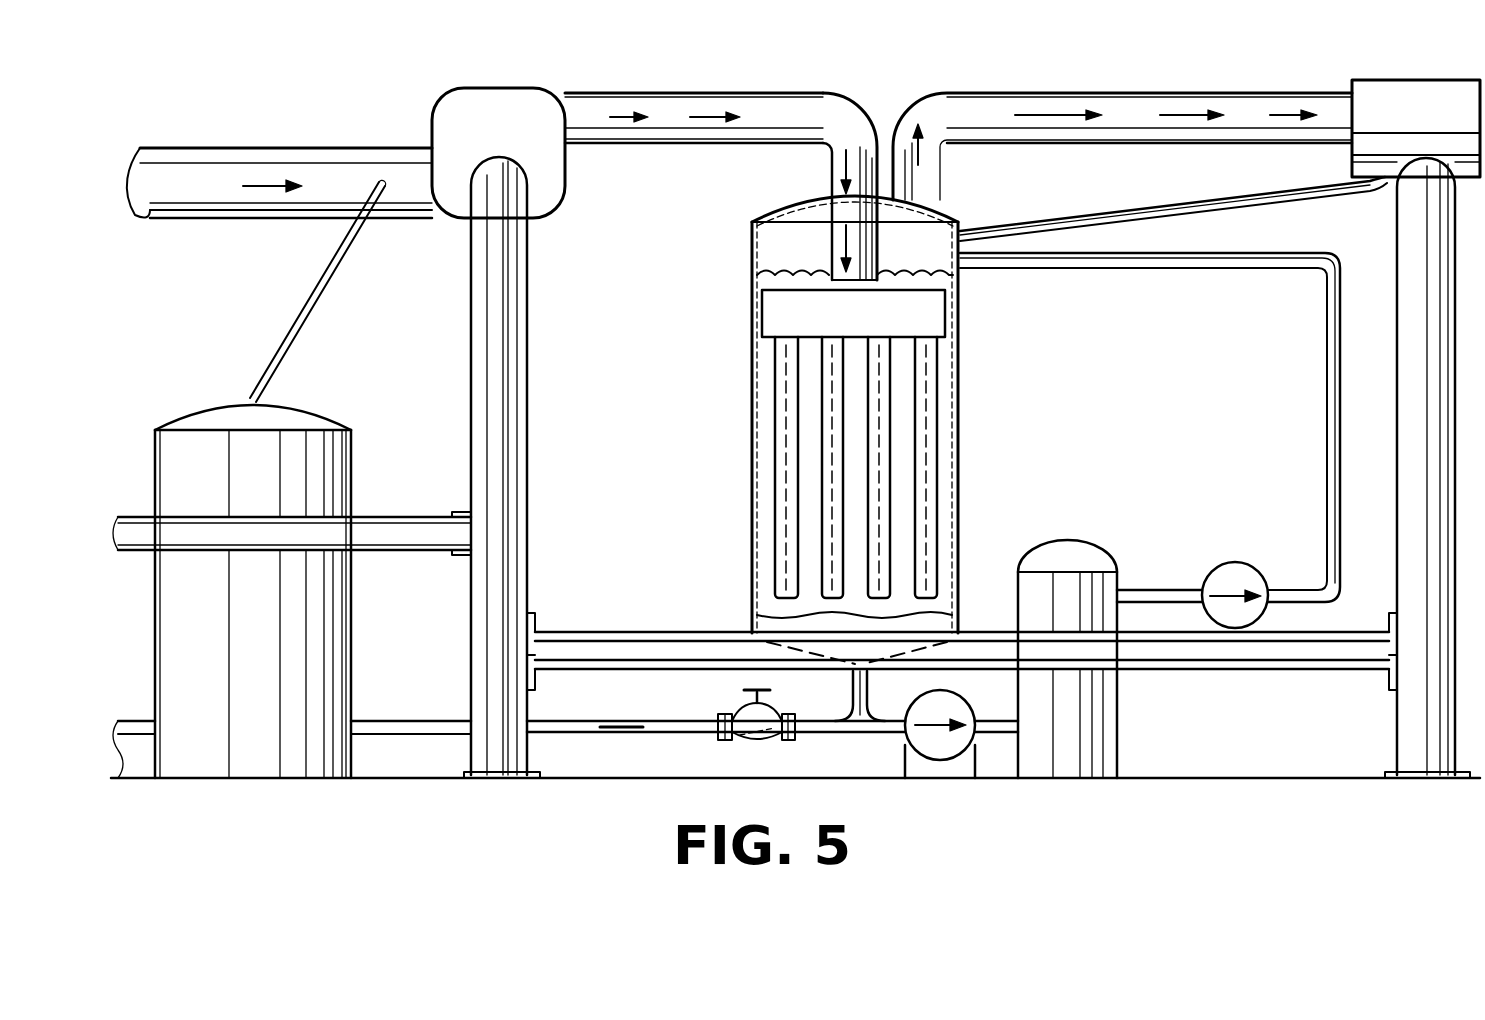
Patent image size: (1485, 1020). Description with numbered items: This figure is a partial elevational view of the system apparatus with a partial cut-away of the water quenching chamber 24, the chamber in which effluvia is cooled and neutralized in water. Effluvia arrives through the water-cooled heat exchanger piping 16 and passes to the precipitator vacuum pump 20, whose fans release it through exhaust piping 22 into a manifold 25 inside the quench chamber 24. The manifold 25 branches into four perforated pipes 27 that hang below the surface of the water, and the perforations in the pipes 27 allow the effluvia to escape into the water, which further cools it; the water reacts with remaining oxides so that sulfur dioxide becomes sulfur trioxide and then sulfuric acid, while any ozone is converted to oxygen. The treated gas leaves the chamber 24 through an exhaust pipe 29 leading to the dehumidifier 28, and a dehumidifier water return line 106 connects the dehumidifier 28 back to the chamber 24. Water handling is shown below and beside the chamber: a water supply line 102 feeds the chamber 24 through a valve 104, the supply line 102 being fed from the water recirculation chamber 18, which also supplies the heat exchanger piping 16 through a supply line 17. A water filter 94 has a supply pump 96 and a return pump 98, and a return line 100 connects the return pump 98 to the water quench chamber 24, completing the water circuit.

The water-cooled heat exchanger piping 16 is at (290, 150).
The supply line 17 is at (335, 258).
The water recirculation chamber 18 is at (300, 414).
The precipitator vacuum pump 20 is at (506, 100).
The exhaust piping 22 is at (672, 135).
The water quenching chamber 24 is at (975, 407).
The manifold 25 is at (838, 327).
The perforated pipes 27 is at (826, 418).
The dehumidifier 28 is at (1420, 92).
The exhaust pipe 29 is at (1113, 130).
The water filter 94 is at (1078, 548).
The supply pump 96 is at (955, 706).
The return pump 98 is at (1248, 572).
The return line 100 is at (1322, 400).
The water supply line 102 is at (672, 721).
The valve 104 is at (768, 735).
The dehumidifier water return line 106 is at (1248, 205).